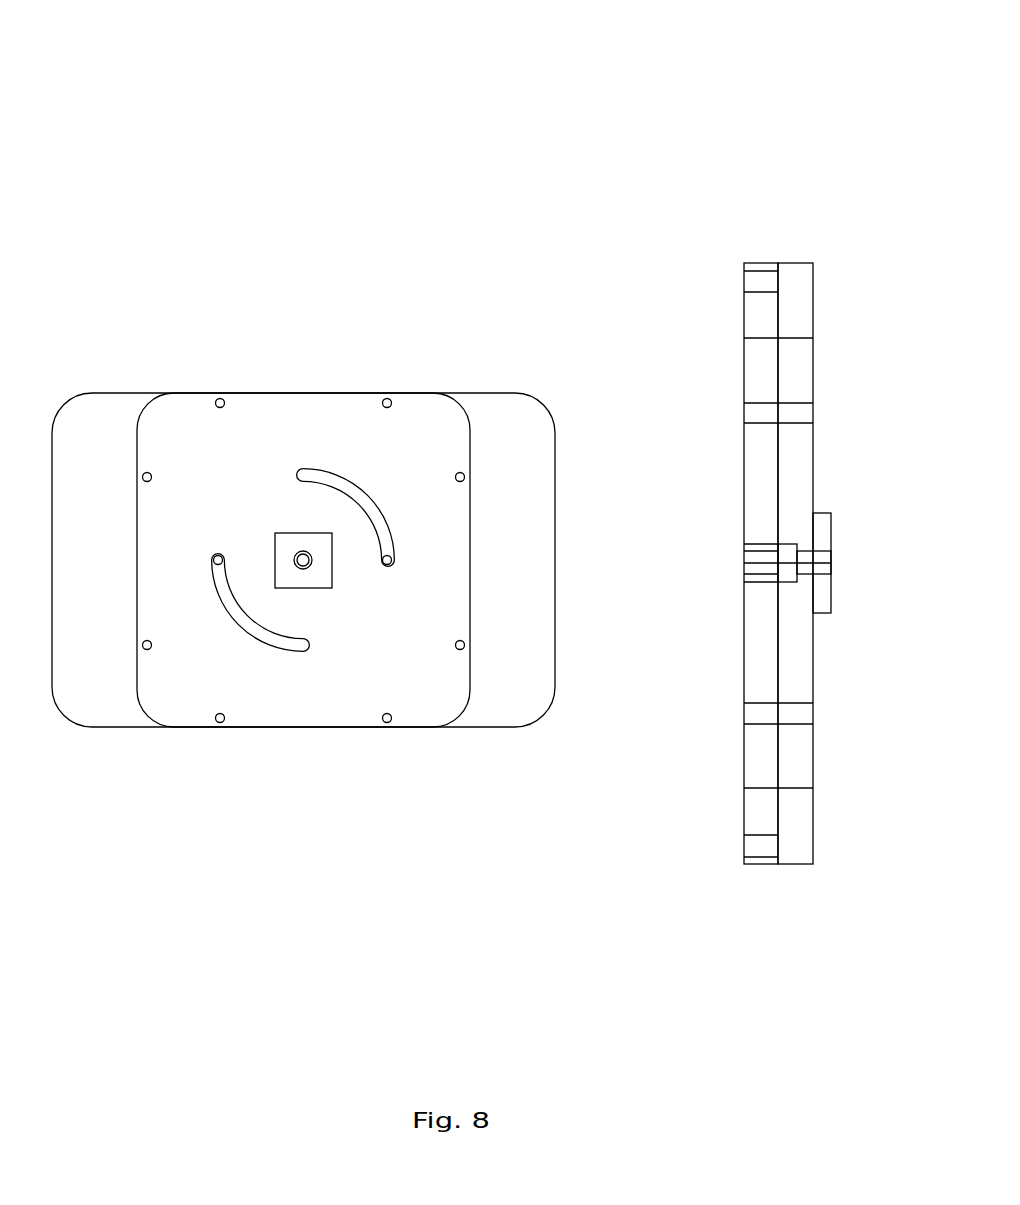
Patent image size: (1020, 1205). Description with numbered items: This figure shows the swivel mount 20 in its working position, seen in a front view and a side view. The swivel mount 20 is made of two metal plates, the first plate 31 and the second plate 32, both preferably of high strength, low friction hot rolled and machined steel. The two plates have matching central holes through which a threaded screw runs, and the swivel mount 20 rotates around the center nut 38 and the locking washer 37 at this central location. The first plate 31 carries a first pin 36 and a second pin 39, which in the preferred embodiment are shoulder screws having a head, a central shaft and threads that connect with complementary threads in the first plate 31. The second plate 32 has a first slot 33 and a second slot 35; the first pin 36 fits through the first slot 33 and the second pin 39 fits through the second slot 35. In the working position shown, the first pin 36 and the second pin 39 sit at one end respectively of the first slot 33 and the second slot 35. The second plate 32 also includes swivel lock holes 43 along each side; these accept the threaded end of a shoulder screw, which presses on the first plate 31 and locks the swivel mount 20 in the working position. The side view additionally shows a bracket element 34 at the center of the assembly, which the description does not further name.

The swivel mount 20 is at (203, 145).
The first plate 31 is at (90, 408).
The second plate 32 is at (438, 420).
The first slot 33 is at (370, 494).
The pivot bracket 34 is at (742, 562).
The second slot 35 is at (232, 620).
The first pin 36 is at (394, 560).
The locking washer 37 is at (286, 540).
The center nut 38 is at (306, 563).
The second pin 39 is at (211, 560).
The swivel lock holes 43 is at (314, 564).